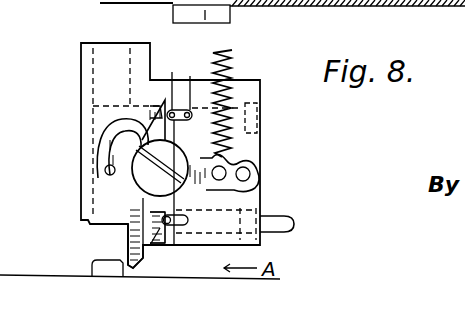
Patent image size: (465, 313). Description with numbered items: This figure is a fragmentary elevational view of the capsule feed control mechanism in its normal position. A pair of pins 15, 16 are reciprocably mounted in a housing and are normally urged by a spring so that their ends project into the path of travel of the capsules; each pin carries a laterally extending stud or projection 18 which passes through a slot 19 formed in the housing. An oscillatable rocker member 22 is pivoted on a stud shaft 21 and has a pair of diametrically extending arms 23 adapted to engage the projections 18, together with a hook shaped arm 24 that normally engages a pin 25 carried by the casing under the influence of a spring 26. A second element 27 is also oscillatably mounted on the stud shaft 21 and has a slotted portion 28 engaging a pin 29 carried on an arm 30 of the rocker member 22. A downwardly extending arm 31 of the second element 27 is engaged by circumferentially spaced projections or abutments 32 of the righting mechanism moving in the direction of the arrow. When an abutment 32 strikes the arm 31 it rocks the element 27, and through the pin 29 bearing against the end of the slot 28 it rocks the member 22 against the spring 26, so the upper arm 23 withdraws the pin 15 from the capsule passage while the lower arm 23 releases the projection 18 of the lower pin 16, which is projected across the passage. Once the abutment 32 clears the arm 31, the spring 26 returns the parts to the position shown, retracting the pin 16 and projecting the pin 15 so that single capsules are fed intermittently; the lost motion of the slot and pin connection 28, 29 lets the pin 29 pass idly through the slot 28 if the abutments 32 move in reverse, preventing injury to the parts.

The pin 15 is at (262, 115).
The pin 16 is at (296, 224).
The stud or projection 18 is at (172, 96).
The slot 19 is at (191, 98).
The stud shaft 21 is at (136, 195).
The oscillatable rocker member 22 is at (200, 158).
The arm 23 is at (158, 108).
The hook shaped arm 24 is at (258, 184).
The pin 25 is at (250, 170).
The spring 26 is at (232, 50).
The second element 27 is at (130, 203).
The slotted portion 28 is at (98, 132).
The pin 29 is at (106, 172).
The arm 30 is at (100, 159).
The downwardly extending arm 31 is at (132, 264).
The projection or abutment 32 is at (105, 267).